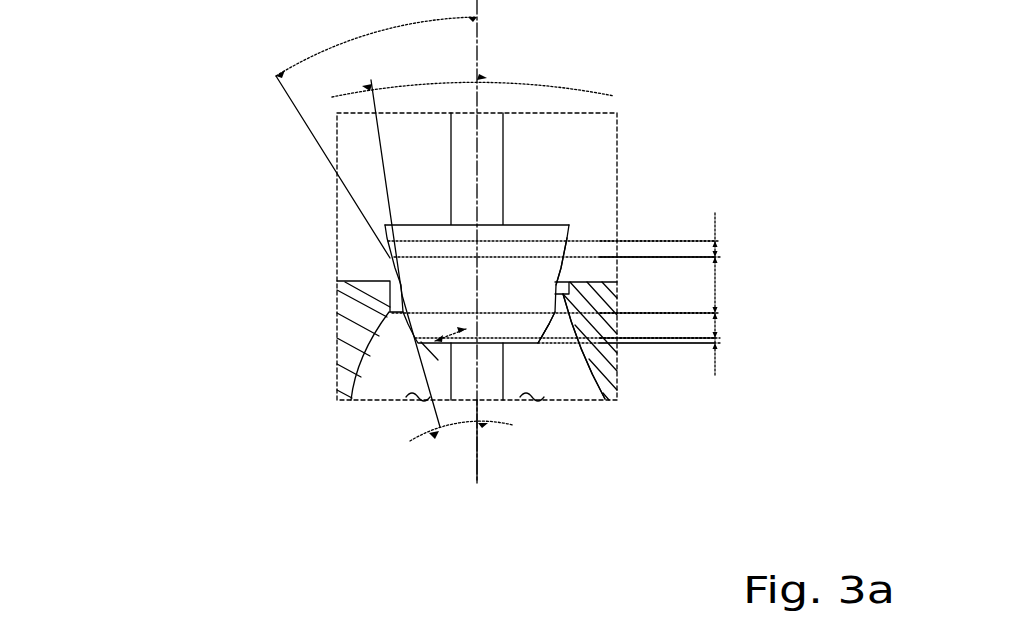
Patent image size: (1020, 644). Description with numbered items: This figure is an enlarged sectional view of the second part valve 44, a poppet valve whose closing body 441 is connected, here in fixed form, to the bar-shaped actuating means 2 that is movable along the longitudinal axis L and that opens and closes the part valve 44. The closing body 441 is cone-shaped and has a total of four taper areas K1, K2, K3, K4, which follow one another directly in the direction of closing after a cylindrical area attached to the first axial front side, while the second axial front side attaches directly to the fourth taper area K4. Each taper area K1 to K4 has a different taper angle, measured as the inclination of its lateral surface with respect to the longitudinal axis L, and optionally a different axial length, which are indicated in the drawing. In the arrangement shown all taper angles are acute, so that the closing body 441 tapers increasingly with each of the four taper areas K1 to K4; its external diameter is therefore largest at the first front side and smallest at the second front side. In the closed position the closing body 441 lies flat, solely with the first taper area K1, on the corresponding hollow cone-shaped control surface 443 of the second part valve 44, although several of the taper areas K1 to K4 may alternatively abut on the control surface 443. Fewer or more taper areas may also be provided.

The actuating means 2 is at (485, 380).
The second part valve 44 is at (567, 174).
The closing body 441 is at (509, 219).
The control surface 443 is at (389, 250).
The first taper area K1 is at (548, 248).
The second taper area K2 is at (612, 312).
The third taper area K3 is at (543, 343).
The fourth taper area K4 is at (530, 323).
The longitudinal axis L is at (482, 453).